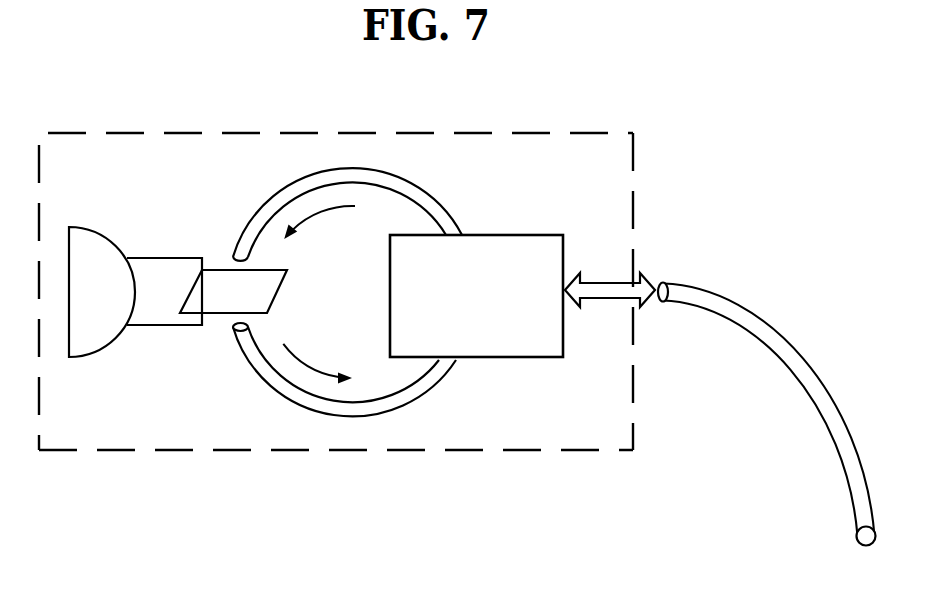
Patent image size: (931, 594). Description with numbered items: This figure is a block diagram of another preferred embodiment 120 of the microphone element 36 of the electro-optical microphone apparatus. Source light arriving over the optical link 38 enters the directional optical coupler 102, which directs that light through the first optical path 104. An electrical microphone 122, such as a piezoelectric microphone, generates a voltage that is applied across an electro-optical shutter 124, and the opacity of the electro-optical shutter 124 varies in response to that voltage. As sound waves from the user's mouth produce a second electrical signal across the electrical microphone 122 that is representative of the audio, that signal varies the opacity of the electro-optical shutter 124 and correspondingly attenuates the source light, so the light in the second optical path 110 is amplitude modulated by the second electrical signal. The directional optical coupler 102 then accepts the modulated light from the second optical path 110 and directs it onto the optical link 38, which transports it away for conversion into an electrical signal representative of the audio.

The microphone element 36 is at (197, 135).
The optical link 38 is at (767, 317).
The directional optical coupler 102 is at (498, 348).
The first optical path 104 is at (425, 183).
The second optical path 110 is at (425, 398).
The preferred embodiment of the microphone element 120 is at (692, 148).
The electrical microphone 122 is at (95, 230).
The electro-optical shutter 124 is at (252, 303).